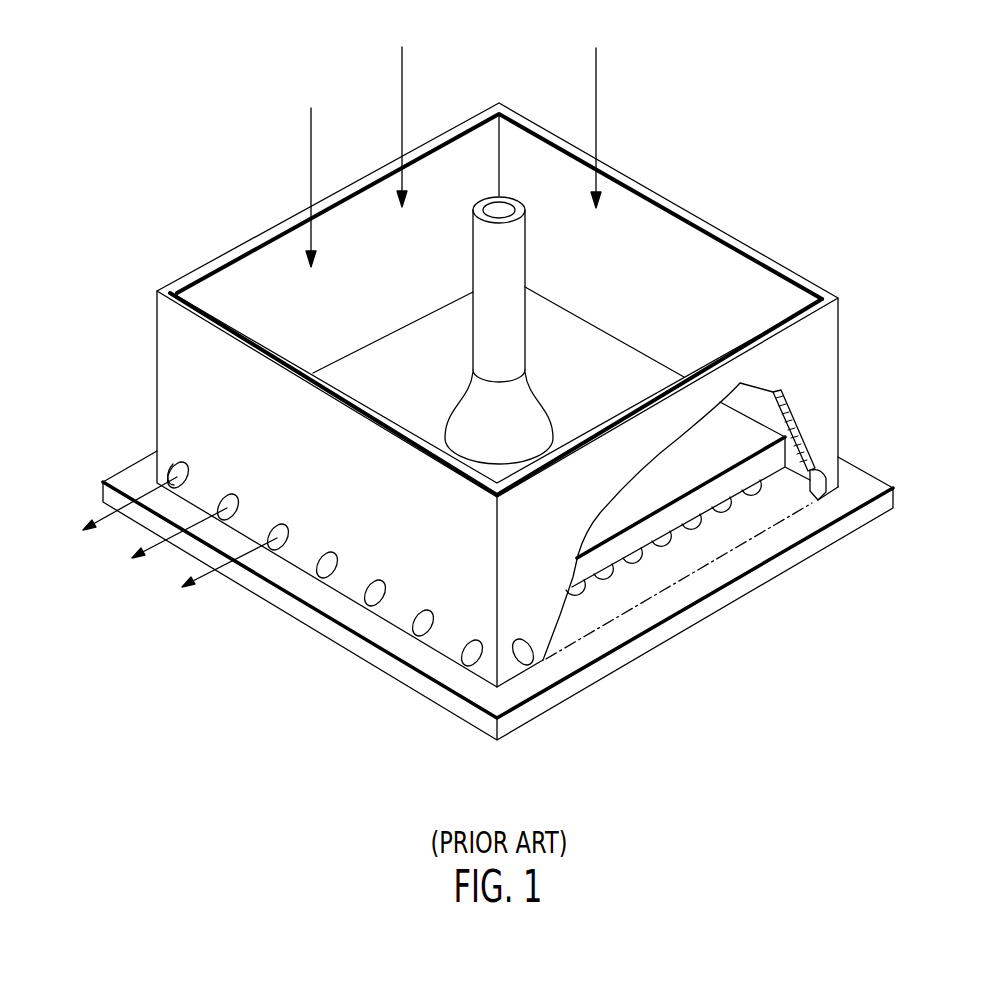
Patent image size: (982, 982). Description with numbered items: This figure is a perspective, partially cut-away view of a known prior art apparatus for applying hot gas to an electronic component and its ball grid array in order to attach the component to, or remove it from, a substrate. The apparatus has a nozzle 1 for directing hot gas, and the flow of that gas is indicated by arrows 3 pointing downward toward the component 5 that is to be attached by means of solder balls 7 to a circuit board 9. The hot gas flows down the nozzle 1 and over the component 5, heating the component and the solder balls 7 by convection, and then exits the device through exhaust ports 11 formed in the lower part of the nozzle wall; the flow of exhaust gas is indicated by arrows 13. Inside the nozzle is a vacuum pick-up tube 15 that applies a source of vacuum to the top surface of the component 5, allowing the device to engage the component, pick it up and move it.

The nozzle 1 is at (247, 247).
The arrows 3 is at (455, 141).
The component 5 is at (717, 492).
The solder balls 7 is at (607, 580).
The circuit board 9 is at (457, 702).
The exhaust ports 11 is at (365, 600).
The arrows 13 is at (160, 546).
The vacuum pick-up tube 15 is at (524, 180).